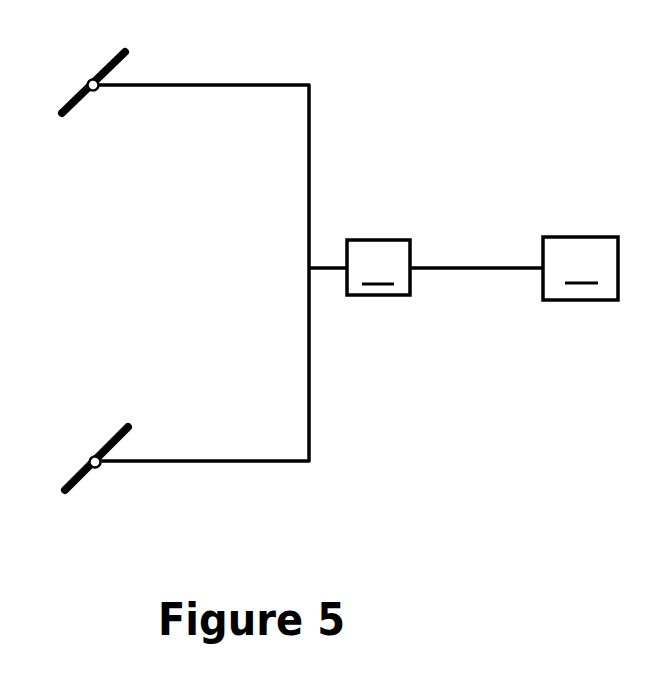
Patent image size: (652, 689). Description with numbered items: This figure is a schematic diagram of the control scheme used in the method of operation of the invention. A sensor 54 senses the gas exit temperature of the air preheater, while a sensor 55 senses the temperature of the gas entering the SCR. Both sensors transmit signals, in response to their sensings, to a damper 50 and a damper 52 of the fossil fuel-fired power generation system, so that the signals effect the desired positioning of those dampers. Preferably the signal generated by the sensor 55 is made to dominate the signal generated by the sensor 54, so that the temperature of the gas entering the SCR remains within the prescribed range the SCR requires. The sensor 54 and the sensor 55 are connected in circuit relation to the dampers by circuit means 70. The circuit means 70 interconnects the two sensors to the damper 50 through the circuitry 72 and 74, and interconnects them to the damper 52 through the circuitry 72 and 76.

The damper 50 is at (75, 482).
The damper 52 is at (110, 60).
The sensor 54 is at (580, 268).
The sensor 55 is at (378, 267).
The circuit means 70 is at (457, 268).
The circuitry 72 is at (415, 268).
The circuitry 74 is at (310, 422).
The circuitry 76 is at (310, 192).